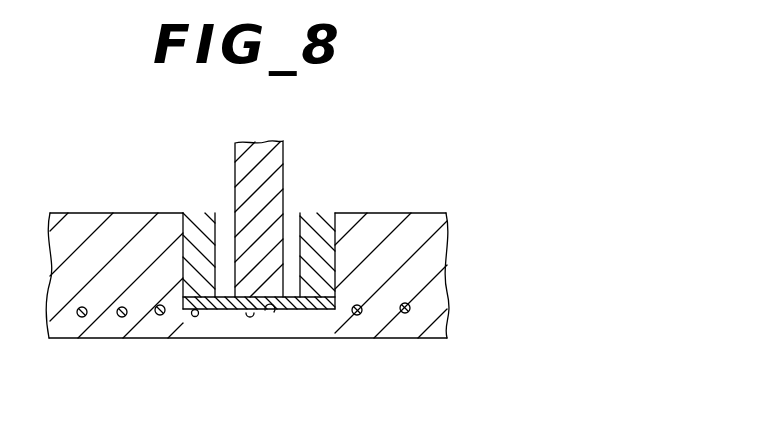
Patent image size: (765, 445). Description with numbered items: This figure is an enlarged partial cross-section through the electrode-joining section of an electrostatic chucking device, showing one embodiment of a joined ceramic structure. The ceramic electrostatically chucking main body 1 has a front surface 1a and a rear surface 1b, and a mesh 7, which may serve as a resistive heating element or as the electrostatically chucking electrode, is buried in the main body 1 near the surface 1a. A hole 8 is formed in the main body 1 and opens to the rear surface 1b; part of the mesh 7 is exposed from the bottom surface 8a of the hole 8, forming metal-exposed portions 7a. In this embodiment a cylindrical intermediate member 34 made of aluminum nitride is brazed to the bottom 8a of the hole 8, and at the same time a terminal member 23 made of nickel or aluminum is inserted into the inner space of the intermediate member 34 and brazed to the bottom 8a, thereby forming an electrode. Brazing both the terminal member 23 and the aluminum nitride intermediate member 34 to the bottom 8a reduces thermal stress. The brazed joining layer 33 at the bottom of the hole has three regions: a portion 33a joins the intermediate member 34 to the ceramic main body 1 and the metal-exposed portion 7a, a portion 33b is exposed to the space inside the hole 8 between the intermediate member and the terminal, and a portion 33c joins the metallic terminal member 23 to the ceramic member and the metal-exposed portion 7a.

The electrostatically chucking main body 1 is at (413, 277).
The surface 1a is at (107, 339).
The rear surface 1b is at (111, 213).
The mesh 7 is at (80, 318).
The metal-exposed portions 7a is at (250, 318).
The hole 8 is at (187, 213).
The bottom surface of the hole 8a is at (274, 314).
The terminal member 23 is at (268, 170).
The joining layer 33 is at (292, 311).
The portion of the joining layer 33a is at (191, 316).
The portion of the joining layer 33b is at (215, 310).
The portion of the joining layer 33c is at (250, 296).
The cylindrical intermediate member 34 is at (320, 224).